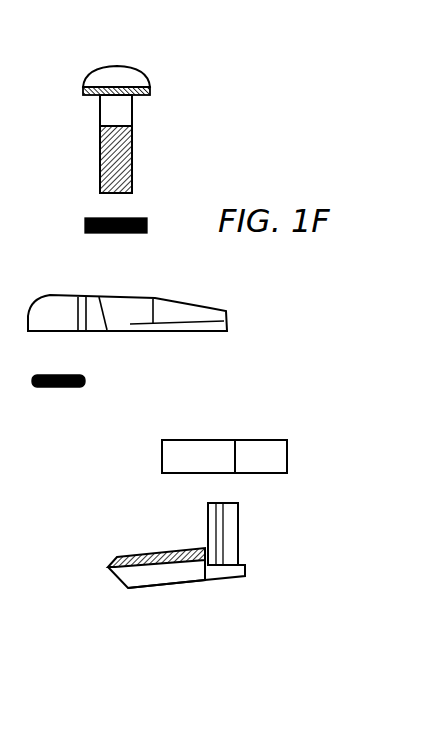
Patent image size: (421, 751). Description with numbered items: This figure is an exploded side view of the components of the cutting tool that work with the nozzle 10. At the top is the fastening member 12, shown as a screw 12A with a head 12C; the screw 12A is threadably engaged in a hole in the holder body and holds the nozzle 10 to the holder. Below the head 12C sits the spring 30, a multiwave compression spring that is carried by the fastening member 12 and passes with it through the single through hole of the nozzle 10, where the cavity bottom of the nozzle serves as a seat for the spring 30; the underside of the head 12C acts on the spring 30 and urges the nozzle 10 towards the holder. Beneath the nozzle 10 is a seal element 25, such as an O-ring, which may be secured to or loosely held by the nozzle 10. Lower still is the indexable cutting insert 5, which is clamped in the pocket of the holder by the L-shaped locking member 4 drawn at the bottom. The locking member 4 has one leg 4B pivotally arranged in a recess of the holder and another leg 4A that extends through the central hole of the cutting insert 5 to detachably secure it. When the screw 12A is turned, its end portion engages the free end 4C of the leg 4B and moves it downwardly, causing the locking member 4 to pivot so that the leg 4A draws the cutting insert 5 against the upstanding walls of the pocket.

The fastening member 12 is at (181, 96).
The head 12C is at (147, 73).
The screw 12A is at (132, 138).
The spring 30 is at (159, 233).
The nozzle 10 is at (254, 315).
The seal element 25 is at (104, 380).
The cutting insert 5 is at (297, 458).
The locking member 4 is at (202, 581).
The leg 4A is at (236, 522).
The leg 4B is at (122, 590).
The free end 4C is at (116, 556).